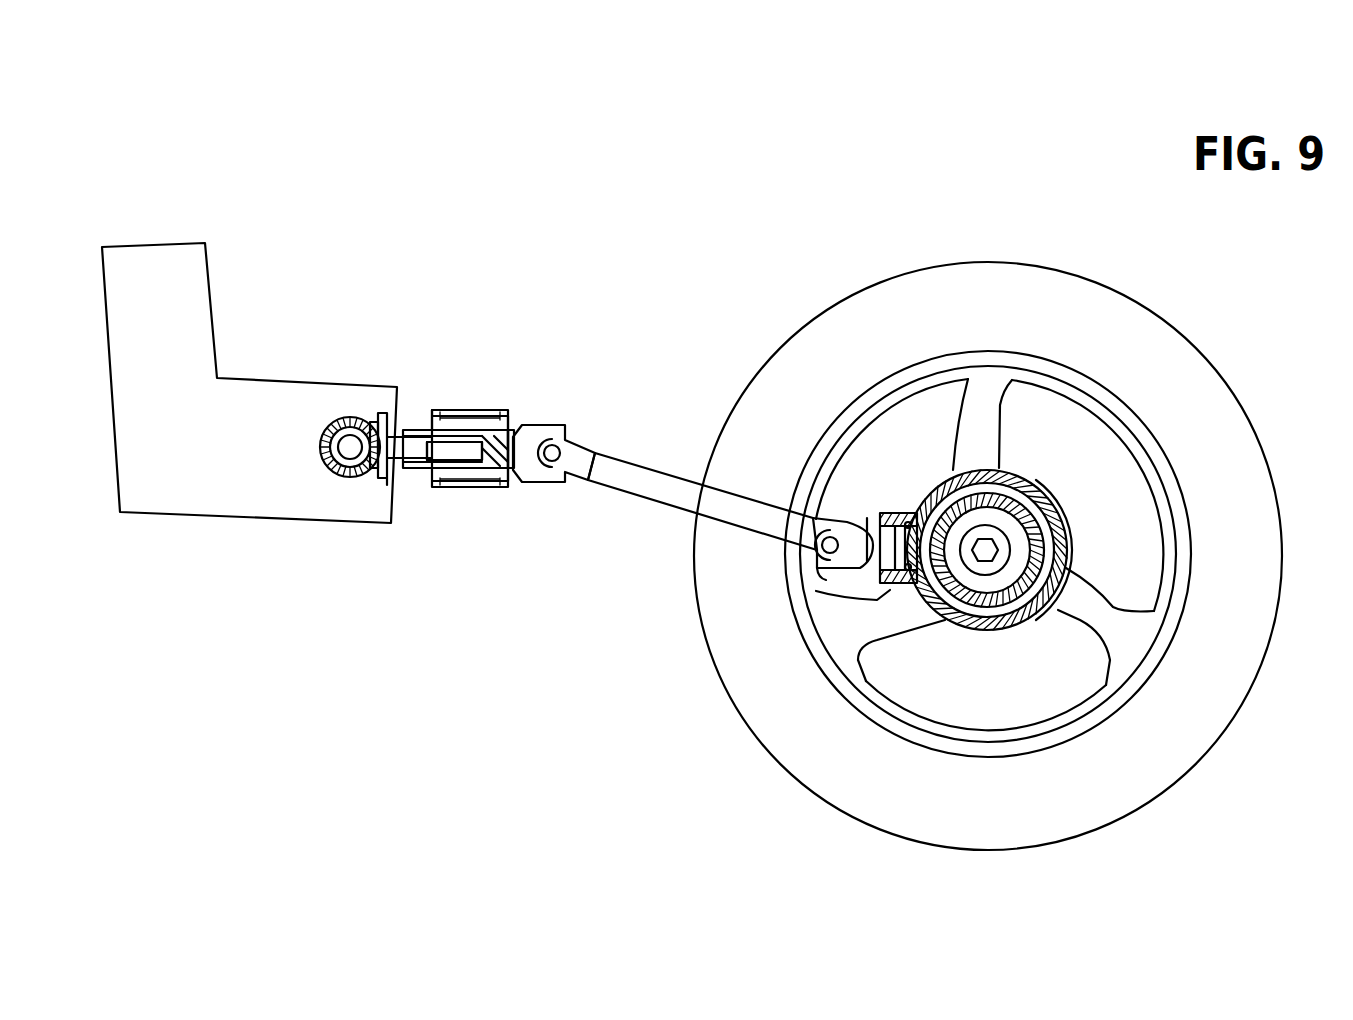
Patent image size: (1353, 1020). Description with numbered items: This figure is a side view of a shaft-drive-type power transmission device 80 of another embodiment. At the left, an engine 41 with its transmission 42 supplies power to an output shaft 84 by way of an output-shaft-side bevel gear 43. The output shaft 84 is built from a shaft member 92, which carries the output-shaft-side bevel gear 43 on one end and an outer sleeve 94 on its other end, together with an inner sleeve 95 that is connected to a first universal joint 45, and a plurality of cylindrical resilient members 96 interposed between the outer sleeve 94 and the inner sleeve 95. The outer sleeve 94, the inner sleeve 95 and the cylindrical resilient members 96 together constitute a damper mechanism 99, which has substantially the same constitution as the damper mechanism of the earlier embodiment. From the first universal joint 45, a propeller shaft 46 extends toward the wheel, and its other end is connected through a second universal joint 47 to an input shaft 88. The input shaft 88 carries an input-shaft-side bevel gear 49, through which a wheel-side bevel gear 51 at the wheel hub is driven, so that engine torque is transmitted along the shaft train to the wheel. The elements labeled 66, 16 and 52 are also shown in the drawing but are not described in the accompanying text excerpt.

The shaft-drive-type power transmission device 80 is at (252, 96).
The engine 41 is at (150, 243).
The transmission 42 is at (365, 384).
The output-shaft-side bevel gear 43 is at (383, 408).
The output shaft 84 is at (487, 370).
The coupling housing 66 is at (460, 410).
The damper mechanism 99 is at (499, 391).
The cylindrical resilient members 96 is at (480, 490).
The inner sleeve 95 is at (460, 490).
The outer sleeve 94 is at (497, 508).
The shaft member 92 is at (392, 487).
The first universal joint 45 is at (575, 398).
The propeller shaft 46 is at (702, 454).
The second universal joint 47 is at (826, 590).
The input shaft 88 is at (888, 592).
The input-shaft-side bevel gear 49 is at (980, 452).
The wheel-side bevel gear 51 is at (1023, 483).
The wheel 16 is at (1057, 270).
The wheel rim 52 is at (1084, 481).